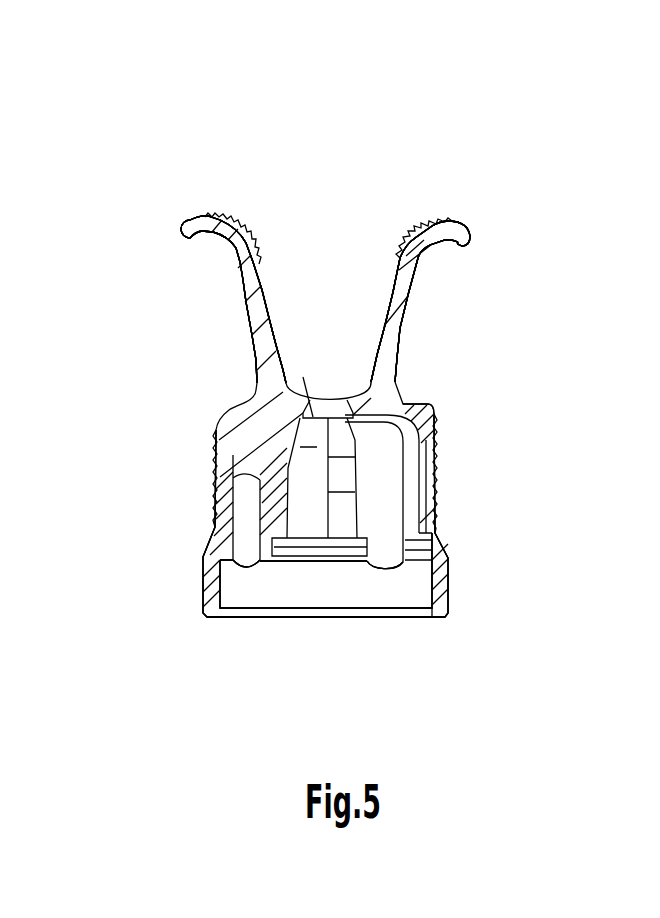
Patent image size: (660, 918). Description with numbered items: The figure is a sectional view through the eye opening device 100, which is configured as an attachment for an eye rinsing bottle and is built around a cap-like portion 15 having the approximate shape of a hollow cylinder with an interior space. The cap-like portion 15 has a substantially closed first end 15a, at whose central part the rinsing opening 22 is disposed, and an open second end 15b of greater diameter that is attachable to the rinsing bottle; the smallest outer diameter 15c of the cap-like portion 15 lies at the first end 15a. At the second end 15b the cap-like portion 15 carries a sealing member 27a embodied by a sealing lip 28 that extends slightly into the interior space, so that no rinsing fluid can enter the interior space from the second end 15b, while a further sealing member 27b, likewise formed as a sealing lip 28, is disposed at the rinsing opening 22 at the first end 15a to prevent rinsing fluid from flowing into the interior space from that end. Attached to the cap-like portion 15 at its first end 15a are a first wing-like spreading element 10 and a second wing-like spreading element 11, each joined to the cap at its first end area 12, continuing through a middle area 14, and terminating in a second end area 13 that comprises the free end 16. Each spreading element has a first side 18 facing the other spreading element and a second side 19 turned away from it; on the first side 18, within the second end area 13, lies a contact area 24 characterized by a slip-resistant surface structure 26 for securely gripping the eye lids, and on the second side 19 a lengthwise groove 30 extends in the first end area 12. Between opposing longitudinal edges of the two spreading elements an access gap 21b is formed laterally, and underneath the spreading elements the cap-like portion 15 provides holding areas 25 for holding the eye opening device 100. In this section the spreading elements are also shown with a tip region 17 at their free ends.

The first wing-like spreading element 10 is at (189, 265).
The second wing-like spreading element 11 is at (545, 226).
The first end area 12 is at (233, 373).
The second end area 13 is at (218, 210).
The middle area 14 is at (232, 306).
The cap-like portion 15 is at (483, 543).
The first end 15a is at (440, 409).
The second end 15b is at (462, 617).
The smallest outer diameter 15c is at (261, 631).
The free end 16 is at (180, 233).
The tip 17 is at (207, 219).
The first side 18 is at (385, 322).
The second side 19 is at (248, 340).
The access gap 21b is at (322, 430).
The rinsing opening 22 is at (321, 407).
The contact area 24 is at (240, 232).
The holding area 25 is at (226, 481).
The slip-resistant surface structure 26 is at (390, 322).
The sealing member 27a is at (417, 621).
The sealing member 27b is at (413, 420).
The sealing lip 28 is at (466, 583).
The lengthwise groove 30 is at (247, 392).
The eye opening device 100 is at (201, 642).